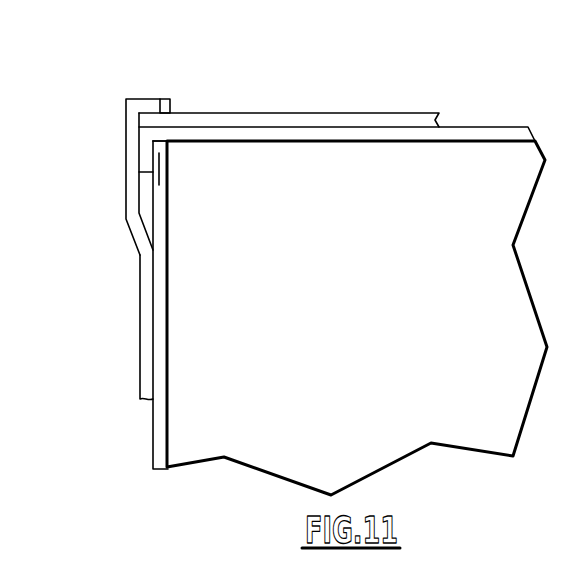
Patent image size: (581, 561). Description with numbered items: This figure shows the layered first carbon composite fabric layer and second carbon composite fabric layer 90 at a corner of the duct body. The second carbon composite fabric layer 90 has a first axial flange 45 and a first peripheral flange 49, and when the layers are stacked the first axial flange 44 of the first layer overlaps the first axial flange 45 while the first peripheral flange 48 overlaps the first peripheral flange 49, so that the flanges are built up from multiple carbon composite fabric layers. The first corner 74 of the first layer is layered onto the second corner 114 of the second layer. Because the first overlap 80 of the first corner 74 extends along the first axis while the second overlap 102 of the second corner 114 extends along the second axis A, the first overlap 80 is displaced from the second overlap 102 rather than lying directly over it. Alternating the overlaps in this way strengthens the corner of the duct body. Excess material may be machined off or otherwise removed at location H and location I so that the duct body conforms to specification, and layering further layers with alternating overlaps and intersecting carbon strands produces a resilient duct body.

The first axial flange 44 is at (148, 275).
The first axial flange 45 is at (152, 348).
The first peripheral flange 48 is at (305, 122).
The first peripheral flange 49 is at (382, 137).
The first corner 74 is at (137, 107).
The first overlap 80 is at (164, 102).
The second carbon composite fabric layer 90 is at (329, 294).
The second overlap 102 is at (159, 185).
The second corner 114 is at (178, 151).
The location H is at (145, 76).
The location I is at (115, 155).
The second axis A is at (39, 186).